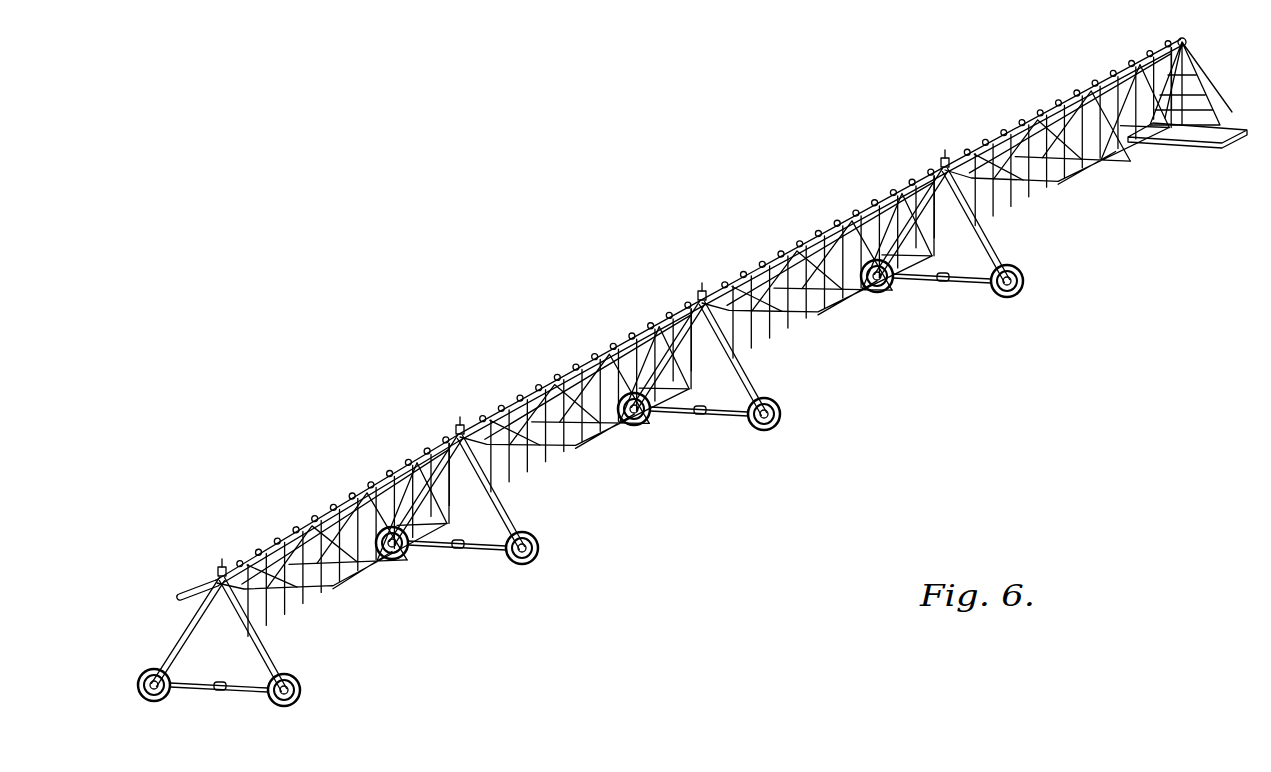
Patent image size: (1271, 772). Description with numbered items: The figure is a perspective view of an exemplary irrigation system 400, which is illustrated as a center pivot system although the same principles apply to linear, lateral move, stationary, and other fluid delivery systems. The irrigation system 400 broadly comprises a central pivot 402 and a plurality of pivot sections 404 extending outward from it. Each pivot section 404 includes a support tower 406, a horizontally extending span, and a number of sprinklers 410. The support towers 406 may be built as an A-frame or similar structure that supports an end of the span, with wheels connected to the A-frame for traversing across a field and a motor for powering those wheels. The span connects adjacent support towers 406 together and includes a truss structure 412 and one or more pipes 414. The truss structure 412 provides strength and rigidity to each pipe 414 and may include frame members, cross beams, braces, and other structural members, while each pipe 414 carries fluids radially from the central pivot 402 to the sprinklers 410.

The irrigation system 400 is at (602, 163).
The central pivot 402 is at (1224, 157).
The pivot section 404 is at (320, 466).
The support tower 406 is at (305, 702).
The sprinkler 410 is at (305, 610).
The truss structure 412 is at (397, 568).
The pipe 414 is at (290, 537).